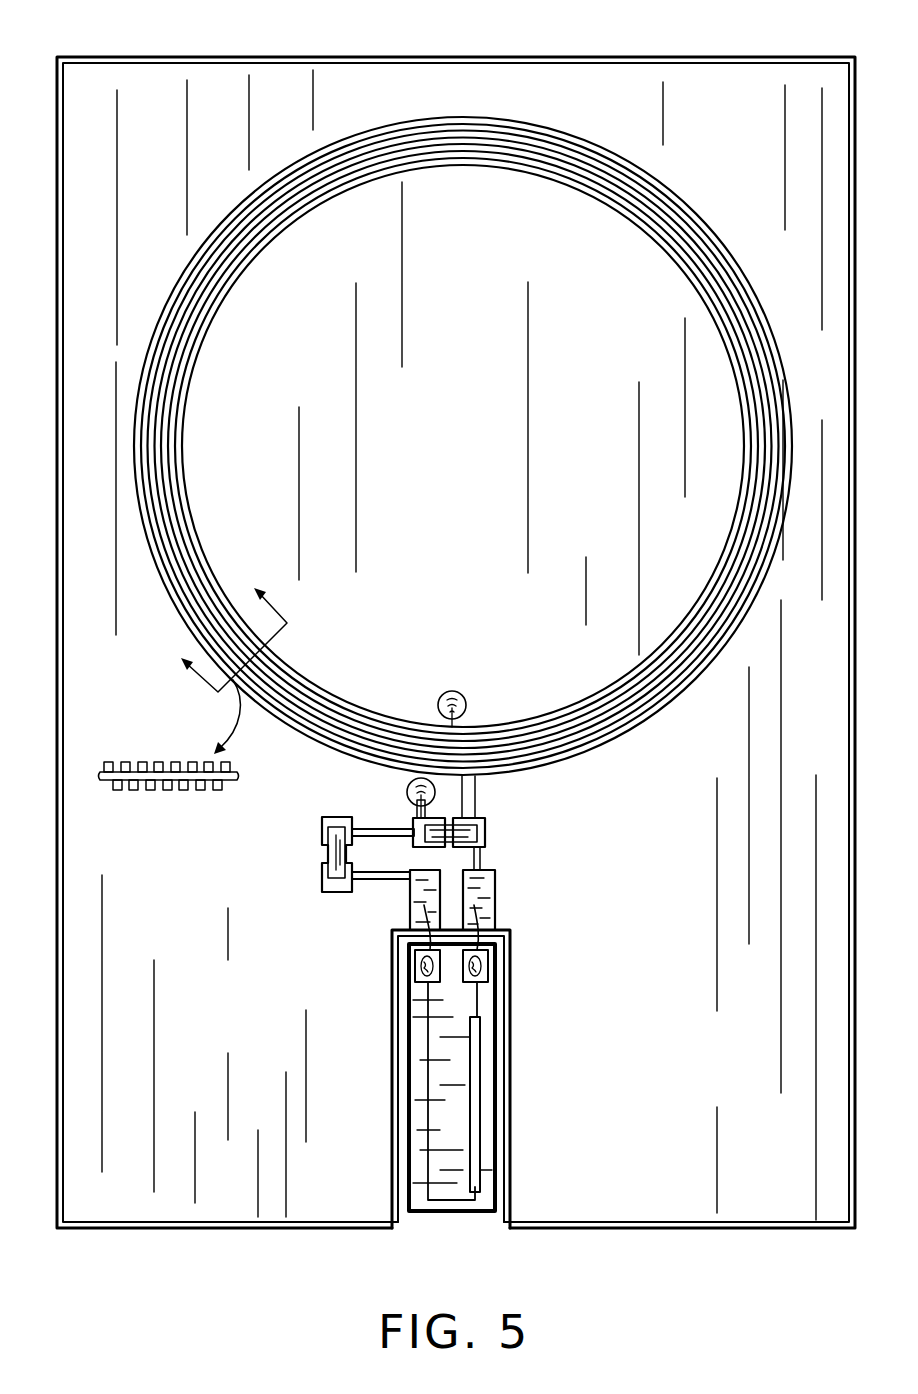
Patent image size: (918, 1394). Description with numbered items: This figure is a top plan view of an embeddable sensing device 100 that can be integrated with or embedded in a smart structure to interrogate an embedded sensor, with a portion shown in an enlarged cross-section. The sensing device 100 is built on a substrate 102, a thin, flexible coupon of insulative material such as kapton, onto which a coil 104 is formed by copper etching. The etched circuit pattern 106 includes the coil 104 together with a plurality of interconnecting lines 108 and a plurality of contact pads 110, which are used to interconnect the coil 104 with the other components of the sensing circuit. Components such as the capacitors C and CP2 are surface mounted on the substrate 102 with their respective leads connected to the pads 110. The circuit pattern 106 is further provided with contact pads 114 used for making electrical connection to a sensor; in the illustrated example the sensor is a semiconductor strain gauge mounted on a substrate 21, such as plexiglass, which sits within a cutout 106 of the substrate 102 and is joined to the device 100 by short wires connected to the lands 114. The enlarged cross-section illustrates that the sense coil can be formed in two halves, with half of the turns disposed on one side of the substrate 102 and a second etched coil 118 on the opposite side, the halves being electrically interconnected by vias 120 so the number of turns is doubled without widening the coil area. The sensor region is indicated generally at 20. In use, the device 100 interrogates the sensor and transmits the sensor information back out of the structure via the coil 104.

The sensing device 100 is at (754, 47).
The substrate 102 is at (742, 1076).
The coil 104 is at (672, 189).
The circuit pattern 106 is at (288, 958).
The interconnecting lines 108 is at (392, 820).
The contact pads 110 is at (322, 858).
The contact pads 114 is at (415, 893).
The second etched coil 118 is at (184, 792).
The vias 120 is at (409, 788).
The tube 20 is at (497, 1050).
The substrate 21 is at (400, 1118).
The capacitor C is at (335, 892).
The capacitor CP2 is at (487, 832).